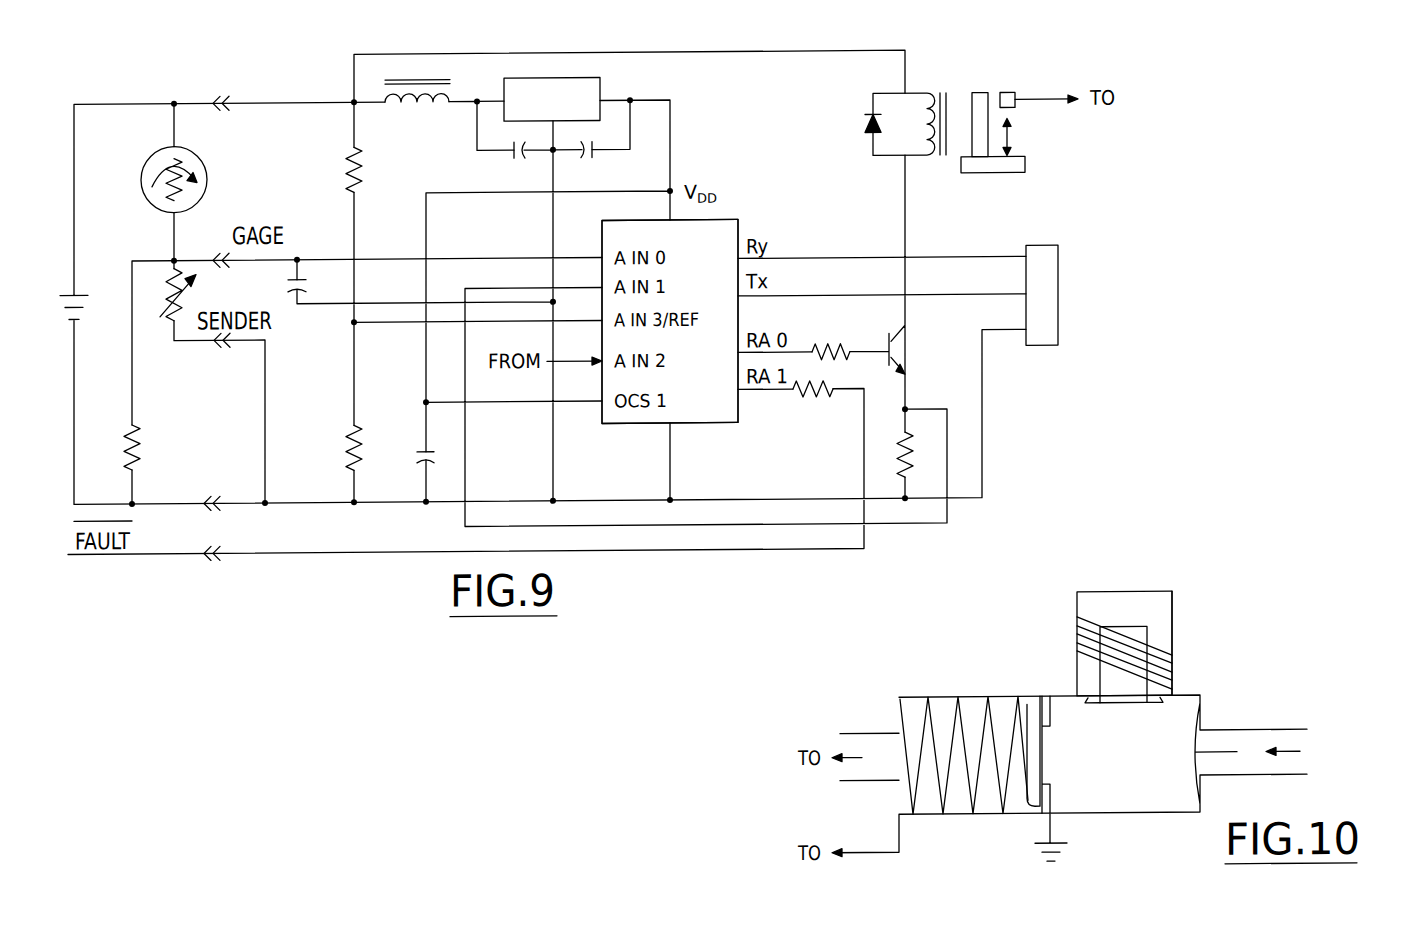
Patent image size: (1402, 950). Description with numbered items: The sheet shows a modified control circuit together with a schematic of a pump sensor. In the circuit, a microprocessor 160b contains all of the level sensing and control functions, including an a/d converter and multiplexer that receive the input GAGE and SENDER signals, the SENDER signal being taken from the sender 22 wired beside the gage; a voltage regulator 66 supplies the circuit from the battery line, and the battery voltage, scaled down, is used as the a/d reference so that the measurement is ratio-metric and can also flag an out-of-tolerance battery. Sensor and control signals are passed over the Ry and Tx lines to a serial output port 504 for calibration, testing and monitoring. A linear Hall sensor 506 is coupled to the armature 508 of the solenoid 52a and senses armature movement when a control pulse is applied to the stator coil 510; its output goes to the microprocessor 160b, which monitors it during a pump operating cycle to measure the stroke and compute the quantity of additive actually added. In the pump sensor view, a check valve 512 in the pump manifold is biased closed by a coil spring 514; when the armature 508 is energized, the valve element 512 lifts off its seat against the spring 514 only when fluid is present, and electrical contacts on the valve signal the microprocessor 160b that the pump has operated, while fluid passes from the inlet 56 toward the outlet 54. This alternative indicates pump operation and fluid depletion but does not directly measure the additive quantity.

In FIG. 9, the fuel level sender 22 is at (160, 289).
In FIG. 9, the voltage regulator 66 is at (603, 95).
In FIG. 9, the microprocessor 160b is at (740, 228).
In FIG. 10, the microprocessor 160b is at (813, 879).
In FIG. 9, the stator coil 510 is at (920, 140).
In FIG. 10, the stator coil 510 is at (1163, 677).
In FIG. 9, the solenoid 52a is at (955, 94).
In FIG. 10, the solenoid 52a is at (1212, 598).
In FIG. 9, the linear Hall sensor 506 is at (1008, 100).
In FIG. 9, the armature 508 is at (978, 149).
In FIG. 10, the armature 508 is at (1130, 636).
In FIG. 9, the serial output port 504 is at (1050, 266).
In FIG. 10, the coil spring 514 is at (962, 724).
In FIG. 10, the check valve 512 is at (1030, 722).
In FIG. 10, the engine 54 is at (813, 783).
In FIG. 10, the fuel tank 56 is at (1331, 752).